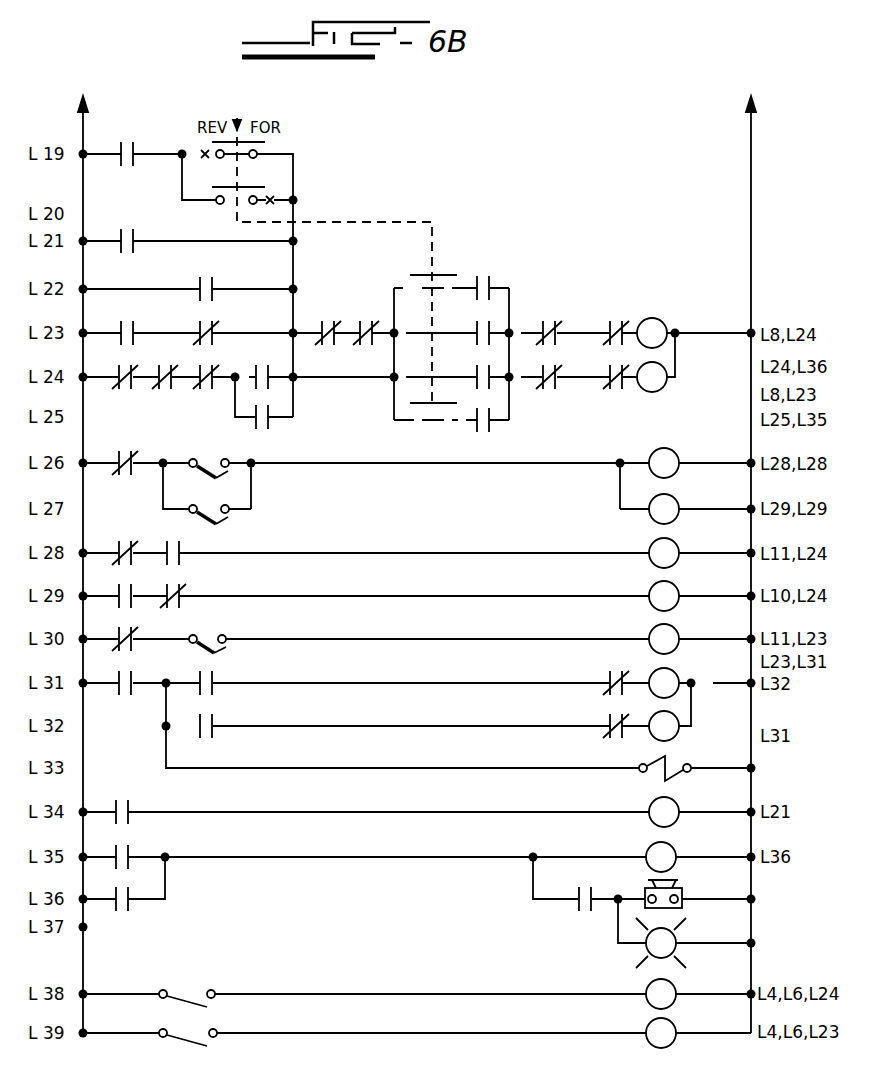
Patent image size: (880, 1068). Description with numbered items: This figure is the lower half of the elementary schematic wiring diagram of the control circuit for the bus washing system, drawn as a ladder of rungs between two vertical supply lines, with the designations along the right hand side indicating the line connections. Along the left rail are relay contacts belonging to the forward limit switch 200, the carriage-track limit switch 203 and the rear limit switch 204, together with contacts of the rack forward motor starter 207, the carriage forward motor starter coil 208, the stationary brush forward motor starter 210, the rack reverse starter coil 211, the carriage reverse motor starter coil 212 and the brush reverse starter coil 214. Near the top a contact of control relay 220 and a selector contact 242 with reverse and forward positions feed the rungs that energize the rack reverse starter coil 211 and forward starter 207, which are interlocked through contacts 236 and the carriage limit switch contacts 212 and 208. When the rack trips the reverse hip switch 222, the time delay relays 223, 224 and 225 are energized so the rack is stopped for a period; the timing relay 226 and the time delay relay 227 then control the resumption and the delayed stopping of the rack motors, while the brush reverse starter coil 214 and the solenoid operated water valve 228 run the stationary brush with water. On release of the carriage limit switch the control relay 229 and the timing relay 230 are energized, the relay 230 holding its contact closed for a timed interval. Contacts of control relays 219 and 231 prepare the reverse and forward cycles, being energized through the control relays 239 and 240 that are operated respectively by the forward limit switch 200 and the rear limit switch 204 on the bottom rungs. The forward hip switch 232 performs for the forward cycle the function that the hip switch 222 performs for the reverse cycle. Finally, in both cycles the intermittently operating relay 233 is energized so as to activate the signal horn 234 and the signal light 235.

The forward limit switch 200 is at (182, 994).
The limit switch 203 is at (204, 636).
The rear limit switch 204 is at (198, 1034).
The motor starter 207 is at (130, 854).
The carriage motor starter coil 208 is at (362, 350).
The motor starter 210 is at (676, 738).
The rack reverse starter coil 211 is at (130, 904).
The carriage reverse motor starter coil 212 is at (324, 348).
The brush reverse starter coil 214 is at (612, 714).
The control relay 219 is at (212, 680).
The control relay 220 is at (210, 286).
The reverse hip switch 222 is at (206, 462).
The time delay relay 223 is at (182, 550).
The time delay relay 224 is at (648, 516).
The time delay relay 225 is at (648, 592).
The timing relay 226 is at (114, 690).
The time delay relay 227 is at (648, 548).
The solenoid operated water valve 228 is at (646, 760).
The control relay 229 is at (130, 808).
The timing relay 230 is at (672, 802).
The control relay coil 231 is at (212, 730).
The forward hip switch 232 is at (212, 512).
The intermittently operating relay 233 is at (580, 902).
The signal horn 234 is at (682, 896).
The signal light 235 is at (682, 954).
The relay contact 236 is at (126, 650).
The control relay 239 is at (650, 1006).
The control relay coil 240 is at (652, 1046).
The selector switch 242 is at (262, 152).